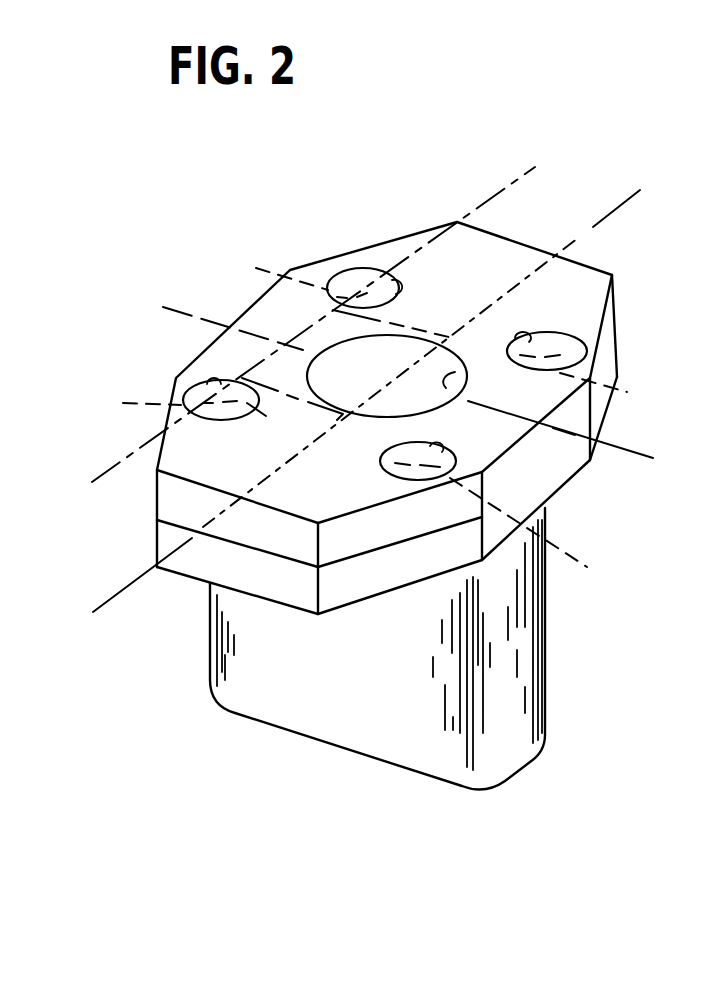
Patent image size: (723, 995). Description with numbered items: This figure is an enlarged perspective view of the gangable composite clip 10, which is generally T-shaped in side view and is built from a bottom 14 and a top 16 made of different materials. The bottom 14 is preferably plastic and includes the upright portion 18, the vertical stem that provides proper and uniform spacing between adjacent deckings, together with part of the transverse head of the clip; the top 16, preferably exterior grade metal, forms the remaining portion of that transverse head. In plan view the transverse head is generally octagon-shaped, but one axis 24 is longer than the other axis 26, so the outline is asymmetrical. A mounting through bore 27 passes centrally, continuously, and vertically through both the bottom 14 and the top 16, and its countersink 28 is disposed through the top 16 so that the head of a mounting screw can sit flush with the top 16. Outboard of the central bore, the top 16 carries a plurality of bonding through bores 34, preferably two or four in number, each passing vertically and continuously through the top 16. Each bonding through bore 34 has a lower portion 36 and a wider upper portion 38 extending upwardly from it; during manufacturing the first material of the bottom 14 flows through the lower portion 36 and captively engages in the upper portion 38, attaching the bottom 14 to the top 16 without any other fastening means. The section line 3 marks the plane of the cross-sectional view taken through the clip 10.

The section line 3- 3 is at (536, 164).
The gangable composite clip 10 is at (284, 250).
The bottom 14 is at (547, 645).
The top 16 is at (238, 321).
The upright portion 18 is at (210, 630).
The axis 24 is at (612, 225).
The axis 26 is at (637, 458).
The mounting through bore 27 is at (373, 408).
The countersink 28 is at (470, 379).
The bonding through bores 34 is at (213, 383).
The lower portion 36 is at (379, 416).
The upper portion 38 is at (352, 278).